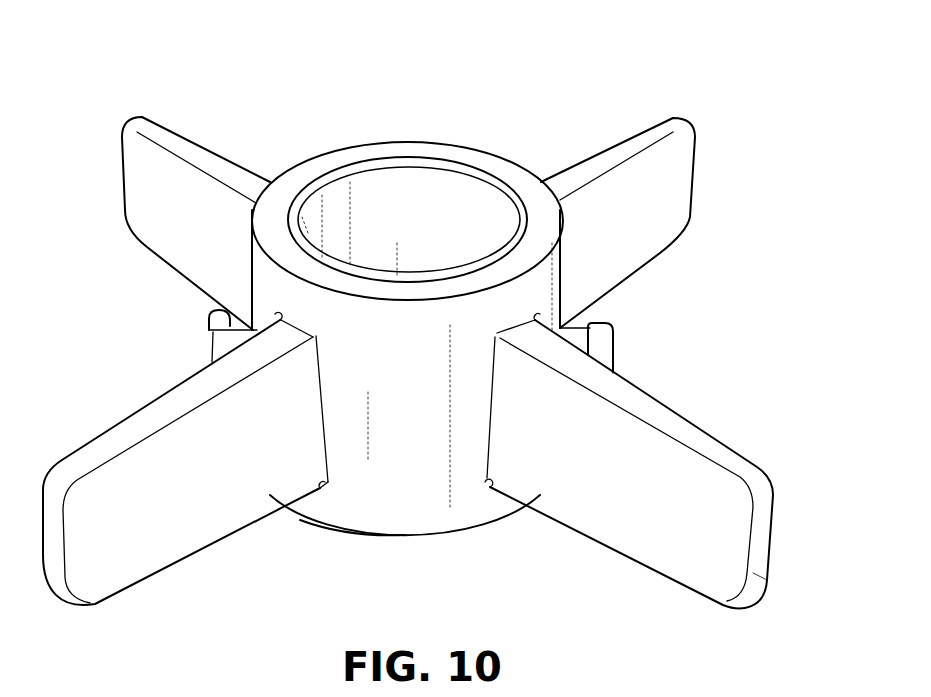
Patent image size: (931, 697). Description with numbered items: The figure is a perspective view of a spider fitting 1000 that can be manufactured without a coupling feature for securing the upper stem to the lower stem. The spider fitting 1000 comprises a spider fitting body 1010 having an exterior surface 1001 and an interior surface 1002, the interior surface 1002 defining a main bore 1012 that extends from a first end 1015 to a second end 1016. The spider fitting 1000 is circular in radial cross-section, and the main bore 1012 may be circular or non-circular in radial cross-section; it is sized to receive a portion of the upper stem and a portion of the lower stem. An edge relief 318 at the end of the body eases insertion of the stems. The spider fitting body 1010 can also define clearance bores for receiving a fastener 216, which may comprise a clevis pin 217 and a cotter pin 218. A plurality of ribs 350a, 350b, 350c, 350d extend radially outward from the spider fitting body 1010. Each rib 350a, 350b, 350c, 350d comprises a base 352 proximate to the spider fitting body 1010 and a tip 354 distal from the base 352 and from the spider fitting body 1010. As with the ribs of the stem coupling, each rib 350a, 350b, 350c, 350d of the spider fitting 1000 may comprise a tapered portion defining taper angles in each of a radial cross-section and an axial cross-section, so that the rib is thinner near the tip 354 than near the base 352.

The spider fitting 1000 is at (610, 89).
The exterior surface 1001 is at (352, 508).
The interior surface 1002 is at (375, 185).
The spider fitting body 1010 is at (415, 510).
The main bore 1012 is at (460, 200).
The first end 1015 is at (410, 142).
The second end 1016 is at (380, 535).
The fastener 216 is at (616, 327).
The clevis pin 217 is at (613, 367).
The cotter pin 218 is at (205, 316).
The edge relief 318 is at (315, 183).
The rib 350a is at (677, 196).
The rib 350b is at (700, 560).
The rib 350c is at (120, 578).
The rib 350d is at (133, 165).
The base 352 is at (507, 425).
The tip 354 is at (762, 552).